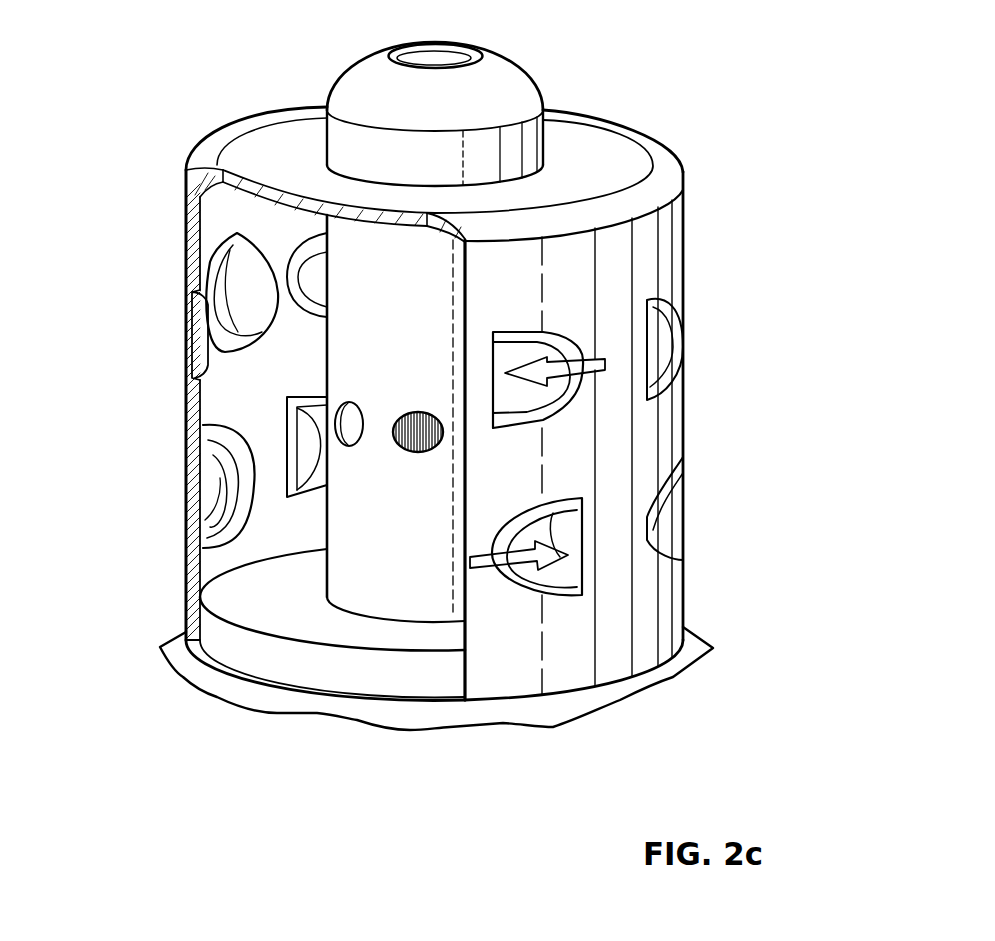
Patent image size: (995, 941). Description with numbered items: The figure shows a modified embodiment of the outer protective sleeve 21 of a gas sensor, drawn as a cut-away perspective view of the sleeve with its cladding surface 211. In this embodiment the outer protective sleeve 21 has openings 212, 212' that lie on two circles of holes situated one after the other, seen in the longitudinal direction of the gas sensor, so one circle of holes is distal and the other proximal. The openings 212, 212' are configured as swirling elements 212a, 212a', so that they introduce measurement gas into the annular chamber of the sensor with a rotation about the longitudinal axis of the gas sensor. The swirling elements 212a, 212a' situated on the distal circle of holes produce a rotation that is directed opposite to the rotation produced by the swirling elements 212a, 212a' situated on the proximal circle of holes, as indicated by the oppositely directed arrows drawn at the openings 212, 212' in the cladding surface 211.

The outer protective sleeve 21 is at (186, 211).
The cladding surface 211 is at (186, 211).
The swirling element 212a is at (166, 292).
The opening 212 is at (131, 335).
The swirling element 212a' is at (155, 479).
The opening 212' is at (141, 491).